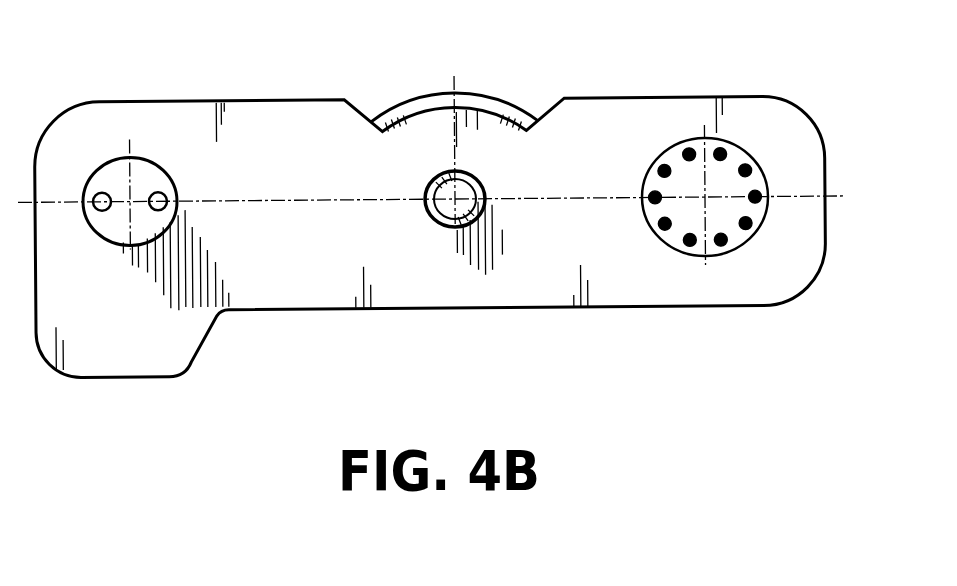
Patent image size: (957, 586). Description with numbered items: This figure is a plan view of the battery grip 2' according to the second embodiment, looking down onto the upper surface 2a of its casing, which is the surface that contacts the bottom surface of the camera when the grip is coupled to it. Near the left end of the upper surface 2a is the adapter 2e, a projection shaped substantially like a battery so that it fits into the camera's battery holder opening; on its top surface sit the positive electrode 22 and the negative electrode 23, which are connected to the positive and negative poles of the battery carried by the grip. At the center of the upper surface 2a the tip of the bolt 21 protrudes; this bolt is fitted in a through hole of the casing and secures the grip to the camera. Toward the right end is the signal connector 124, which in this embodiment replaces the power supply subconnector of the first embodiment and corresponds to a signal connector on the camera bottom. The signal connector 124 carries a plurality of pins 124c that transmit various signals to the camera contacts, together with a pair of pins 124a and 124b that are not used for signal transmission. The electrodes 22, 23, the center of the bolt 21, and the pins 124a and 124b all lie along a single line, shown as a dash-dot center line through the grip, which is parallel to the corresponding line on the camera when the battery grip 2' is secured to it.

The battery grip 2' is at (431, 189).
The upper surface 2a is at (352, 176).
The adapter 2e is at (108, 172).
The bolt 21 is at (430, 212).
The positive electrode 22 is at (100, 205).
The negative electrode 23 is at (165, 190).
The signal connector 124 is at (648, 173).
The pin 124a is at (798, 178).
The pin 124b is at (650, 200).
The pins 124c is at (662, 168).